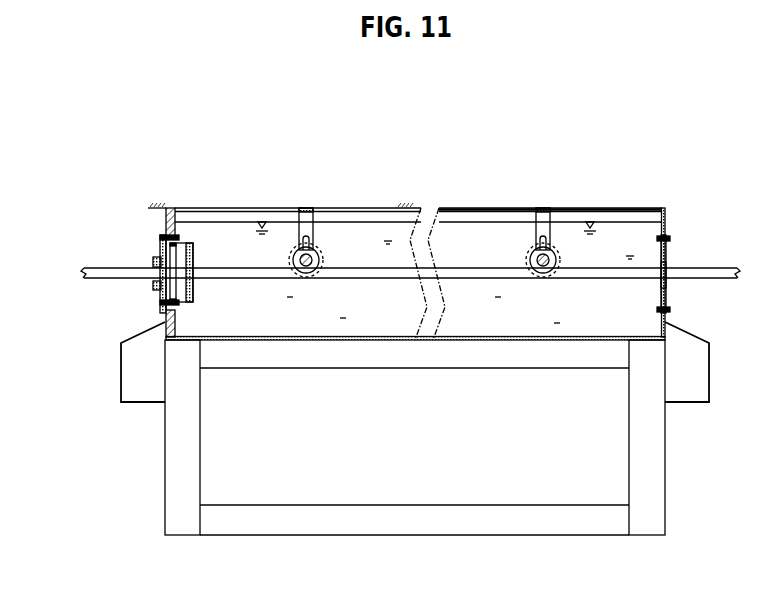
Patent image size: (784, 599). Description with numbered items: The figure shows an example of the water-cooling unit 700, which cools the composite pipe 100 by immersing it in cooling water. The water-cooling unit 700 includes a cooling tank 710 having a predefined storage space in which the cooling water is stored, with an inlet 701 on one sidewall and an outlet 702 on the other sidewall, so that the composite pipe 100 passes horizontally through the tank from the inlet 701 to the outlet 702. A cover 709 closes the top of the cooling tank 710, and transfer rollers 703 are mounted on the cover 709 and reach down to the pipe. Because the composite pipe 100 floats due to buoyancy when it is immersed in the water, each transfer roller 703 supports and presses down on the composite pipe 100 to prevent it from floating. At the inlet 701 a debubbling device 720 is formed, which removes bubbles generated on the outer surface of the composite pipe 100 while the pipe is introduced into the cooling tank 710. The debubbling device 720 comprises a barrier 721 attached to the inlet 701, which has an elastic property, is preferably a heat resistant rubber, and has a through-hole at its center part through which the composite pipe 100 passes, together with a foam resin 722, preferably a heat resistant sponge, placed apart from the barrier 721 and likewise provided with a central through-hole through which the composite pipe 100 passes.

The composite pipe 100 is at (97, 269).
The water-cooling unit 700 is at (326, 186).
The inlet 701 is at (155, 286).
The outlet 702 is at (667, 275).
The transfer roller 703 is at (299, 255).
The cover 709 is at (613, 212).
The cooling tank 710 is at (662, 208).
The debubbling device 720 is at (173, 164).
The barrier 721 is at (160, 252).
The foam resin 722 is at (194, 258).